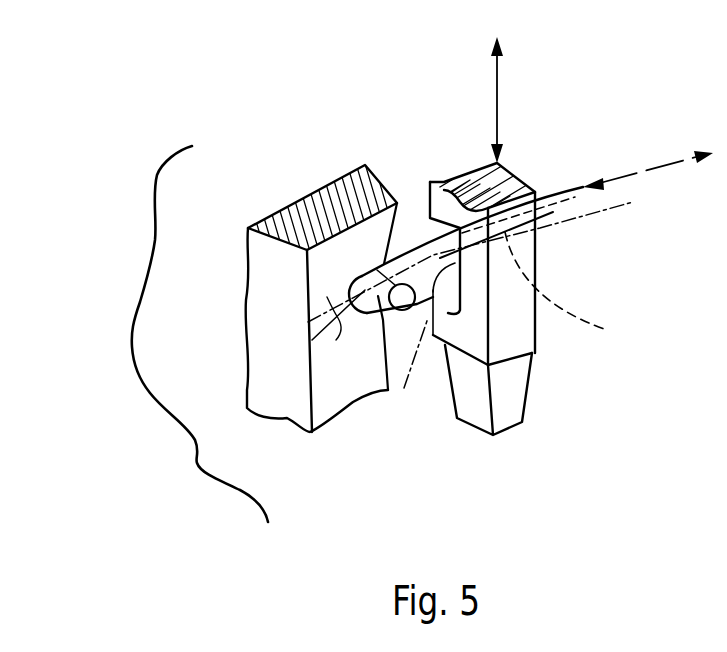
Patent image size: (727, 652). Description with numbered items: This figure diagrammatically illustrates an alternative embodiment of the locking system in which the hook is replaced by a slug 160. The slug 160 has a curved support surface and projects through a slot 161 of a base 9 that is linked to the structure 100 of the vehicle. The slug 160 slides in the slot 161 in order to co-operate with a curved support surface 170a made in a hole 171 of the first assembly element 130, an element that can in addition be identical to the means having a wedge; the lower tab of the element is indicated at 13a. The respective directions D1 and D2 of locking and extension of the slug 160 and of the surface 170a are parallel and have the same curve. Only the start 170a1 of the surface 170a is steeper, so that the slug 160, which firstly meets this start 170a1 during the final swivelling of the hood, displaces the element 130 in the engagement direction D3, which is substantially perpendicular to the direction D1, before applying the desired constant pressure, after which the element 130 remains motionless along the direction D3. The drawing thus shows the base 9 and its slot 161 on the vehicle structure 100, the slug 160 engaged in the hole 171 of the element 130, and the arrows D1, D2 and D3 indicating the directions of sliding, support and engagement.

The structure 100 is at (247, 189).
The base 9 is at (278, 365).
The slot 161 is at (420, 225).
The slug 160 is at (377, 296).
The first assembly element 130 is at (506, 333).
The tab 13a is at (483, 400).
The hole 171 is at (447, 245).
The curved support surface 170a is at (586, 289).
The start of the surface 170a1 is at (433, 335).
The direction of locking and extension of the slug D1 is at (563, 193).
The direction of locking and extension of the surface D2 is at (628, 205).
The engagement direction D3 is at (497, 110).